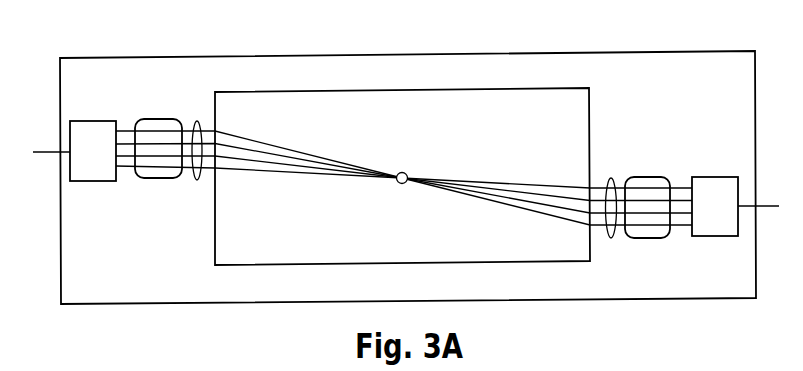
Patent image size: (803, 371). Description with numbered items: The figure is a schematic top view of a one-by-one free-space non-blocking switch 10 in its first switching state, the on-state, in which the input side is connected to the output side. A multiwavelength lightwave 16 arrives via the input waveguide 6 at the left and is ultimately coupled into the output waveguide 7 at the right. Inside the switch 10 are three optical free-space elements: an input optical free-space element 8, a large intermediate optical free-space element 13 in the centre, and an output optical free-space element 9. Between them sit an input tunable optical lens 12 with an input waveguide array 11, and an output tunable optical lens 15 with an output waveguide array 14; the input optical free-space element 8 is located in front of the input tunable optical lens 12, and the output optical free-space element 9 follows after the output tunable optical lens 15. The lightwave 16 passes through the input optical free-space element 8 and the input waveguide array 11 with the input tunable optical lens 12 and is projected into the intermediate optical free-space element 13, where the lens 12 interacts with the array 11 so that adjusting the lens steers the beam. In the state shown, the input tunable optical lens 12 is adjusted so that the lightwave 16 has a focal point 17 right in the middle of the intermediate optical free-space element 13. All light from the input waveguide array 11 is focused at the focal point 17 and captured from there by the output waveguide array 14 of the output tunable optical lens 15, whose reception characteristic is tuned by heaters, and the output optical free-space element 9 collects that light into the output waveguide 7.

The input waveguide 6 is at (48, 151).
The output waveguide 7 is at (768, 206).
The input optical free-space element 8 is at (98, 125).
The output optical free-space element 9 is at (707, 177).
The 1×1 free-space non-blocking switch 10 is at (147, 58).
The input waveguide array 11 is at (197, 121).
The input tunable optical lens 12 is at (152, 120).
The intermediate optical free-space element 13 is at (256, 257).
The output waveguide array 14 is at (609, 178).
The output tunable optical lens 15 is at (645, 239).
The lightwave 16 is at (325, 177).
The focal point 17 is at (402, 172).